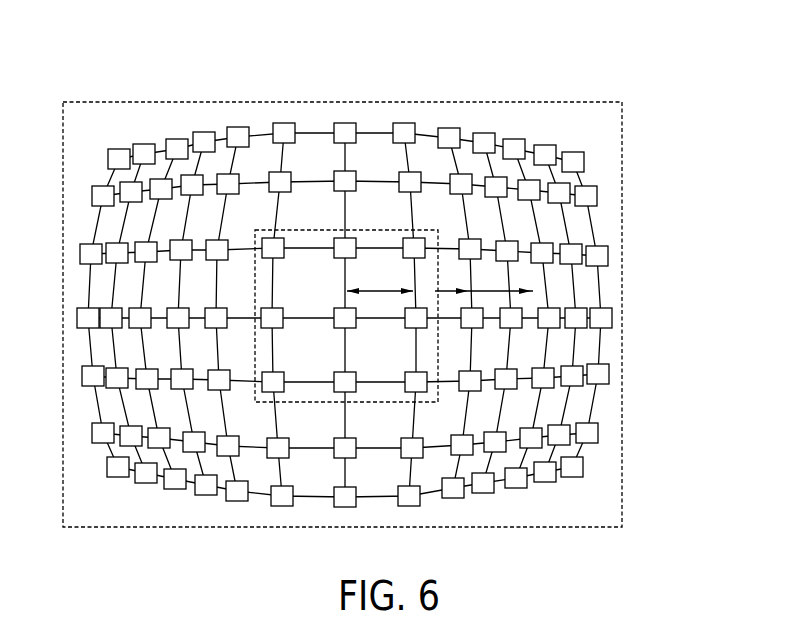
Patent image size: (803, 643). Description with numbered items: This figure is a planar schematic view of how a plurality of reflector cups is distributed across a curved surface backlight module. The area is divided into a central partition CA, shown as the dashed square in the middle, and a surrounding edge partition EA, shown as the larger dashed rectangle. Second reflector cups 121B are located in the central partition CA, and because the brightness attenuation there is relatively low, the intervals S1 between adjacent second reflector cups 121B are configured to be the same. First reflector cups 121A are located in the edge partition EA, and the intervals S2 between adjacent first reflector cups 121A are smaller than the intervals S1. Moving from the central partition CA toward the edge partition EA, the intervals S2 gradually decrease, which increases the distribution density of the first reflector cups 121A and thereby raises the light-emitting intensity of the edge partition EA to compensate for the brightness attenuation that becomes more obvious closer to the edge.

The edge partition EA is at (342, 274).
The central partition CA is at (346, 224).
The first reflector cups 121A is at (405, 315).
The second reflector cups 121B is at (485, 315).
The intervals between adjacent second reflector cups S1 is at (380, 276).
The intervals between adjacent first reflector cups S2 is at (484, 276).